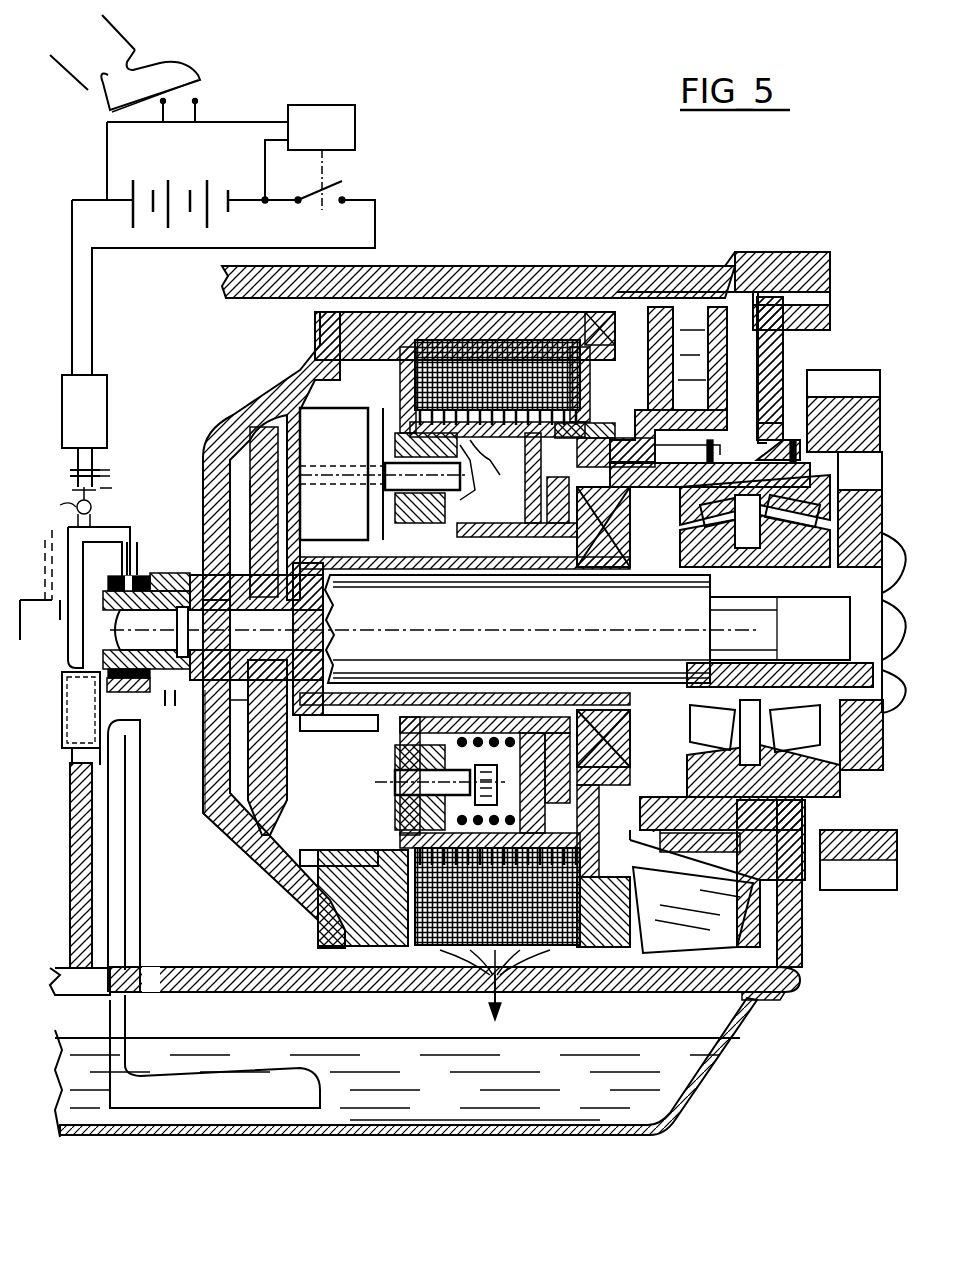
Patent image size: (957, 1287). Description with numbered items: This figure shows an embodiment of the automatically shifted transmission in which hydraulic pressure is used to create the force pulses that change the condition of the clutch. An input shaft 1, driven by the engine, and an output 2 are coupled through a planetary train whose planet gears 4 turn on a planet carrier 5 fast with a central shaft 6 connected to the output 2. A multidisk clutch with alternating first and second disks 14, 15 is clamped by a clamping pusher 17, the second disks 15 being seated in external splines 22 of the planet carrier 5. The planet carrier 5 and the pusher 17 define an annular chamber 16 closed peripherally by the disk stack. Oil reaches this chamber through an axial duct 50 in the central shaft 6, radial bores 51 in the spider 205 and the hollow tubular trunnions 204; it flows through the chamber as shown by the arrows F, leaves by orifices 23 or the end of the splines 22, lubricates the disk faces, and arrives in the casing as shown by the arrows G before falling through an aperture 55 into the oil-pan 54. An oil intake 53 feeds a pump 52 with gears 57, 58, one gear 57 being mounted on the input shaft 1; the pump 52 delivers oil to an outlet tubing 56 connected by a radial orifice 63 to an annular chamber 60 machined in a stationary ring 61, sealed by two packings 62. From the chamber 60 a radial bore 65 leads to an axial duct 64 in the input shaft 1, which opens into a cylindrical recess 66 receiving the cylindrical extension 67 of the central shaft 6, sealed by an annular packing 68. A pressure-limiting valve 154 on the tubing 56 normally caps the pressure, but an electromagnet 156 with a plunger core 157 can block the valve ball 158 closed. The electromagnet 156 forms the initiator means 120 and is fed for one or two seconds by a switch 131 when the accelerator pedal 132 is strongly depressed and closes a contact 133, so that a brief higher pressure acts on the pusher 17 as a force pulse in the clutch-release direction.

The input shaft 1 is at (42, 600).
The output 2 is at (865, 880).
The planet gears 4 is at (330, 415).
The planet carrier 5 is at (255, 398).
The central shaft 6 is at (855, 545).
The first disks 14 is at (572, 975).
The second disks 15 is at (405, 860).
The annular chamber 16 is at (475, 480).
The clamping pusher 17 is at (522, 485).
The external splines 22 is at (510, 438).
The orifices 23 is at (410, 405).
The axial duct 50 is at (330, 606).
The radial bores 51 is at (252, 435).
The pump 52 is at (58, 676).
The oil intake 53 is at (195, 1082).
The oil-pan 54 is at (712, 1050).
The aperture 55 is at (510, 978).
The outlet tubing 56 is at (108, 527).
The gear 57 is at (70, 504).
The gear 58 is at (60, 745).
The annular chamber 60 is at (152, 560).
The stationary ring 61 is at (132, 720).
The packings 62 is at (145, 555).
The radial orifice 63 is at (136, 585).
The axial duct 64 is at (182, 706).
The radial bore 65 is at (140, 685).
The cylindrical recess 66 is at (330, 652).
The cylindrical extension 67 is at (270, 700).
The annular packing 68 is at (207, 806).
The initiator means 120 is at (58, 455).
The switch 131 is at (352, 186).
The accelerator pedal 132 is at (200, 78).
The contact 133 is at (182, 98).
The pressure-limiting valve 154 is at (80, 492).
The electromagnet 156 is at (100, 375).
The plunger core 157 is at (102, 470).
The valve ball 158 is at (102, 488).
The tubular trunnions 204 is at (405, 520).
The spider 205 is at (248, 500).
The arrows F is at (477, 457).
The arrows G is at (478, 975).